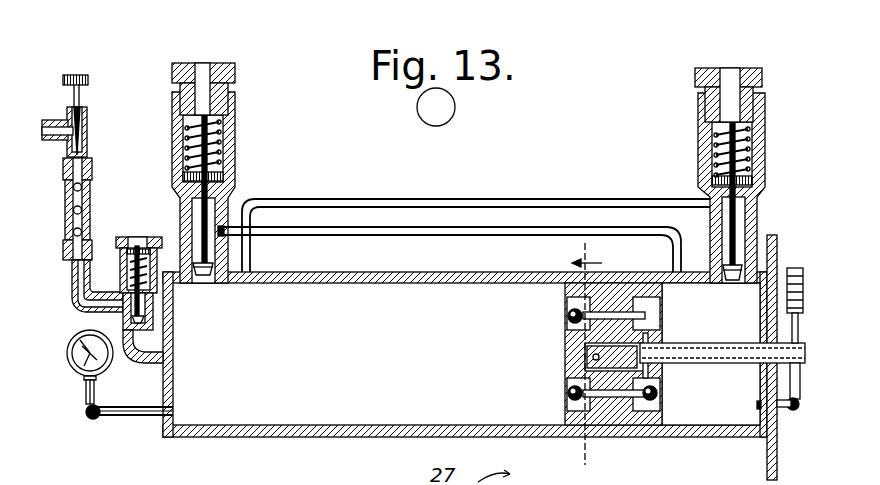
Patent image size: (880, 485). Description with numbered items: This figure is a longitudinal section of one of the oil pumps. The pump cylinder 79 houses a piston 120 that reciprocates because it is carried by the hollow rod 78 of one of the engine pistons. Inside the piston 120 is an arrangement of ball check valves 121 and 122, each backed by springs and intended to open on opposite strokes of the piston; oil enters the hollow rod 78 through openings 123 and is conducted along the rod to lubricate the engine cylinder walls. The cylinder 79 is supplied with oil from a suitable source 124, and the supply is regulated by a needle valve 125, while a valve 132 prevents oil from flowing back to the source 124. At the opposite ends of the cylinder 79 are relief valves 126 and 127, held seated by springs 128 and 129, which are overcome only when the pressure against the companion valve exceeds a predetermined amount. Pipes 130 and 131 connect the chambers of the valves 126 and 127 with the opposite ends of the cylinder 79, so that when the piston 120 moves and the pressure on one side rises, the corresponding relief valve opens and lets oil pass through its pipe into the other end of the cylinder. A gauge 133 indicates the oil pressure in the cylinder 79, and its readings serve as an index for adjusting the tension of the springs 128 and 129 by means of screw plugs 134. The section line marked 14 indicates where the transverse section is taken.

The section line 14- 14 is at (587, 363).
The hollow rod 78 is at (687, 368).
The pump cylinder 79 is at (350, 437).
The piston 120 is at (603, 428).
The ball check valves 121 is at (566, 318).
The ball check valves 122 is at (660, 318).
The openings 123 is at (565, 360).
The source 124 is at (48, 140).
The needle valve 125 is at (80, 102).
The relief valve 126 is at (203, 280).
The relief valve 127 is at (735, 262).
The spring 128 is at (236, 149).
The spring 129 is at (698, 141).
The pipe 130 is at (305, 238).
The pipe 131 is at (400, 197).
The valve 132 is at (125, 315).
The gauge 133 is at (80, 372).
The screw plug 134 is at (236, 76).